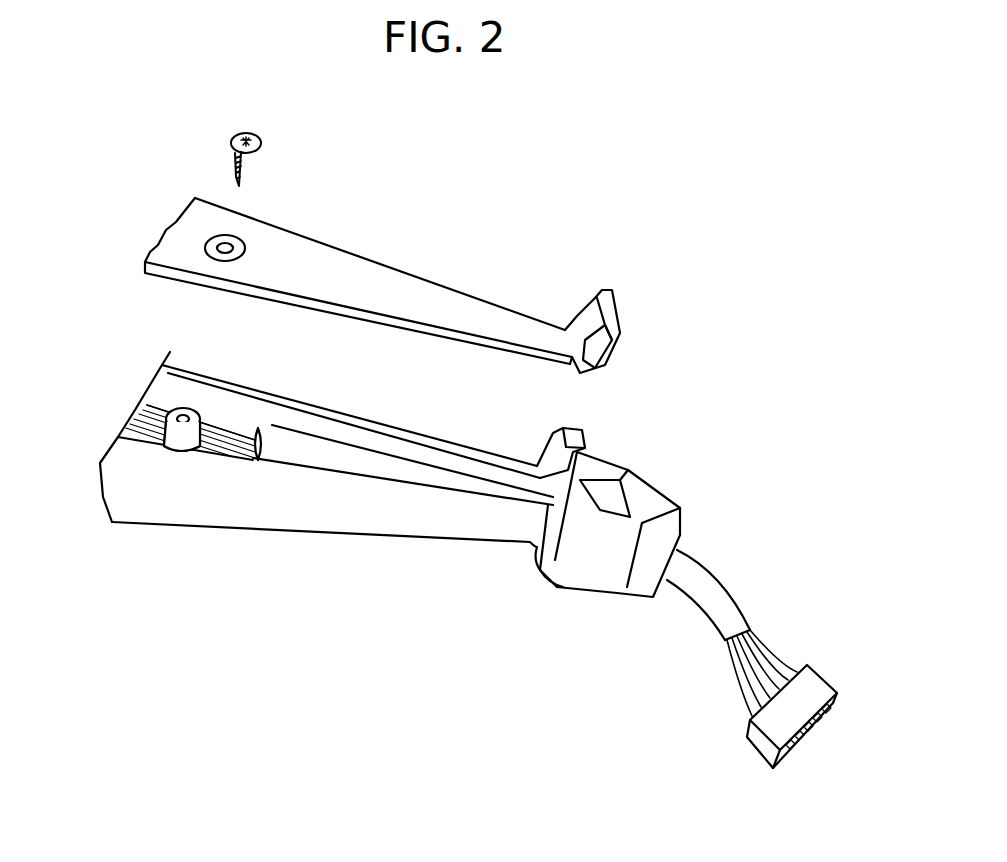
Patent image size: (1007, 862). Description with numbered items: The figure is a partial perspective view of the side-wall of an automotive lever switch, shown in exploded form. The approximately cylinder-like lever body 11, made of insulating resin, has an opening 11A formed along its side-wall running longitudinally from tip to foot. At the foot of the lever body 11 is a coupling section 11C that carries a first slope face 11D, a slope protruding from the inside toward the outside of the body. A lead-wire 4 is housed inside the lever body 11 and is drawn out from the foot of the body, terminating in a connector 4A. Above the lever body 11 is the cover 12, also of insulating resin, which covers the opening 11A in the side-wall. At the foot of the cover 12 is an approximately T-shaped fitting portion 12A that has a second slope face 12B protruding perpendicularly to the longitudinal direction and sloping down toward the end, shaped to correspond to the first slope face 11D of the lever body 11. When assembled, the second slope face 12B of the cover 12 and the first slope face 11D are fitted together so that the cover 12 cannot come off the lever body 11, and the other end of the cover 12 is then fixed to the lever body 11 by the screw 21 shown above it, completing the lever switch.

The screw 21 is at (265, 133).
The cover 12 is at (433, 281).
The fitting portion 12A is at (643, 310).
The second slope face 12B is at (597, 348).
The lever body 11 is at (403, 485).
The opening 11A is at (272, 418).
The coupling section 11C is at (570, 438).
The first slope face 11D is at (578, 463).
The lead-wire 4 is at (763, 635).
The connector 4A is at (813, 688).